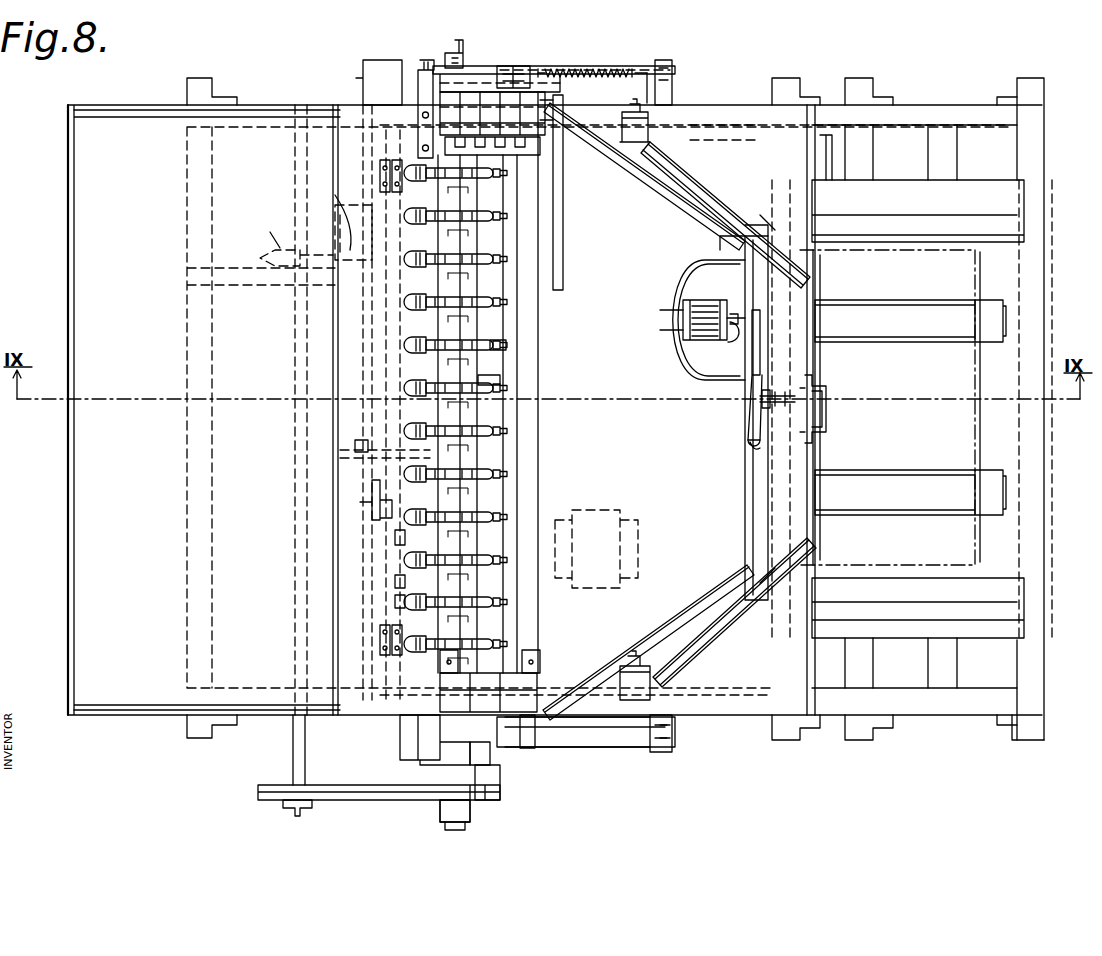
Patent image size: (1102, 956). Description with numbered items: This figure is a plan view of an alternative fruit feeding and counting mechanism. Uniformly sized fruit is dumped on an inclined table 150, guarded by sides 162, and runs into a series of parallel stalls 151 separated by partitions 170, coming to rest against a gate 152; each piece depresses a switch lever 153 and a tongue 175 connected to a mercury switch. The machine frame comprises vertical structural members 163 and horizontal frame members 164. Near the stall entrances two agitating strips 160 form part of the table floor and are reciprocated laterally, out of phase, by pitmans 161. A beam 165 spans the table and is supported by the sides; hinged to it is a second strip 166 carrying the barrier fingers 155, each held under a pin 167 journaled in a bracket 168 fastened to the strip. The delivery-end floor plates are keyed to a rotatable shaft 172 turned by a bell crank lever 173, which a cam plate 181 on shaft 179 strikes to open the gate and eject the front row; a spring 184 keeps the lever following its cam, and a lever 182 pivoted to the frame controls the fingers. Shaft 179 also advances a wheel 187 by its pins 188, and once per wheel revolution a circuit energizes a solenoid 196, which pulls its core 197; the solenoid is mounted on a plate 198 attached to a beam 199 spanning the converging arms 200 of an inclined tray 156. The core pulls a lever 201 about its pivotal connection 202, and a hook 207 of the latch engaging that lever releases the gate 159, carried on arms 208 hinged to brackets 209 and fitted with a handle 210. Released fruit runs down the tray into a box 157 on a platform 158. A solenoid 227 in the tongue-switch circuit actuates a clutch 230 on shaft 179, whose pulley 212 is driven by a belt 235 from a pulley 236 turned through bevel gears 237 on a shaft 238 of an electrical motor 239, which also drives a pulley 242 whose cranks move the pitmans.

The inclined table 150 is at (90, 242).
The stalls 151 is at (440, 415).
The gate 152 is at (596, 302).
The switch lever 153 is at (500, 348).
The barrier fingers 155 is at (435, 546).
The inclined tray 156 is at (707, 140).
The box 157 is at (972, 285).
The platform 158 is at (975, 188).
The gate 159 is at (816, 358).
The agitating strips 160 is at (370, 62).
The pitmans 161 is at (345, 460).
The sides 162 is at (140, 95).
The vertical structural members 163 is at (214, 100).
The horizontal frame members 164 is at (187, 603).
The beam 165 is at (345, 313).
The second strip 166 is at (388, 666).
The pin 167 is at (420, 566).
The bracket 168 is at (400, 585).
The partition 170 is at (380, 486).
The rotatable shaft 172 is at (514, 66).
The bell crank lever 173 is at (530, 68).
The tongue 175 is at (500, 378).
The shaft 179 is at (470, 34).
The cam plate 181 is at (412, 66).
The lever 182 is at (625, 750).
The spring 184 is at (565, 78).
The wheel 187 is at (548, 150).
The pins 188 is at (525, 160).
The solenoid 196 is at (700, 302).
The core 197 is at (730, 344).
The plate 198 is at (680, 278).
The beam 199 is at (755, 497).
The converging arms 200 is at (665, 190).
The lever 201 is at (752, 372).
The pivotal connection 202 is at (750, 446).
The hook 207 is at (764, 404).
The arms 208 is at (742, 200).
The brackets 209 is at (648, 130).
The handle 210 is at (828, 396).
The pulley 212 is at (500, 812).
The solenoid 227 is at (500, 780).
The clutch 230 is at (490, 758).
The belt 235 is at (382, 800).
The pulley 236 is at (288, 786).
The bevel gears 237 is at (335, 218).
The shaft 238 is at (330, 185).
The electrical motor 239 is at (606, 504).
The pulley 242 is at (368, 190).